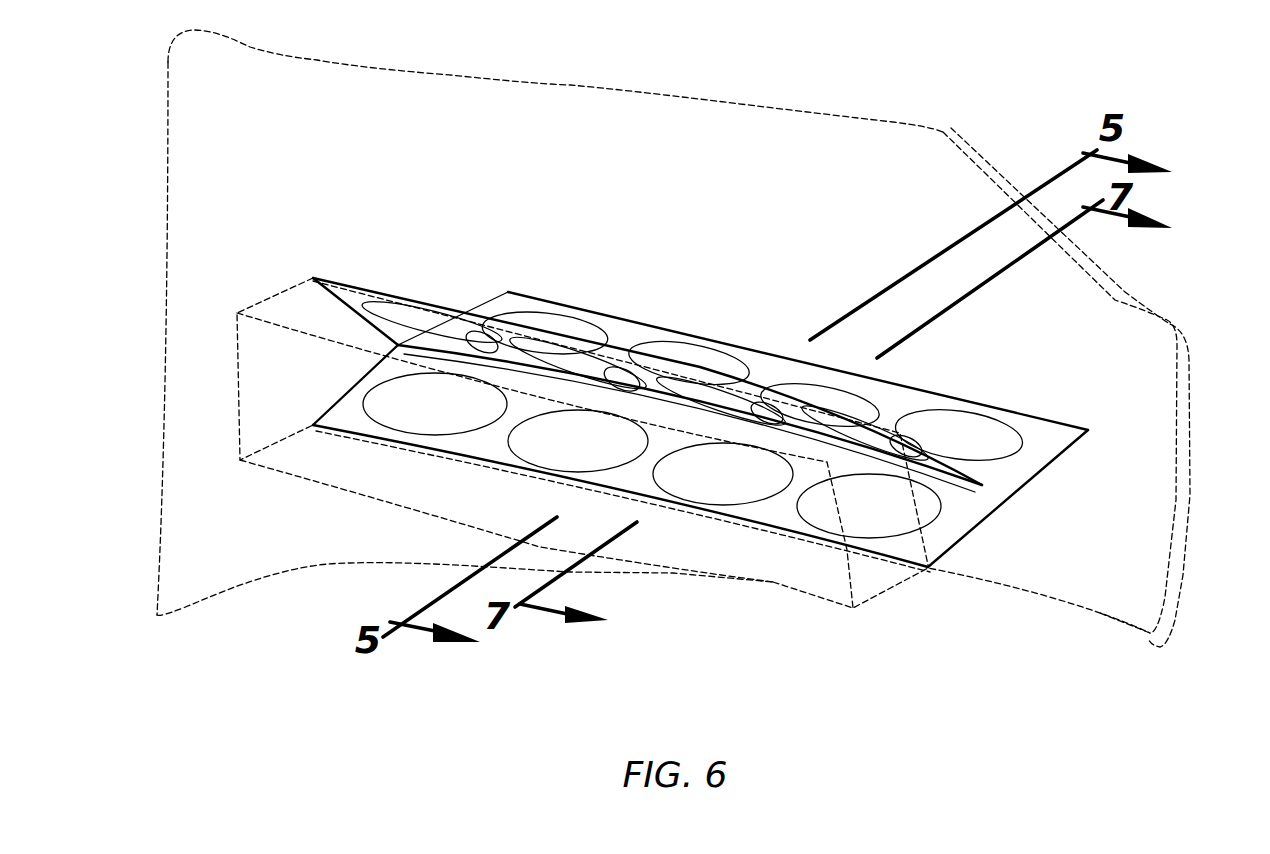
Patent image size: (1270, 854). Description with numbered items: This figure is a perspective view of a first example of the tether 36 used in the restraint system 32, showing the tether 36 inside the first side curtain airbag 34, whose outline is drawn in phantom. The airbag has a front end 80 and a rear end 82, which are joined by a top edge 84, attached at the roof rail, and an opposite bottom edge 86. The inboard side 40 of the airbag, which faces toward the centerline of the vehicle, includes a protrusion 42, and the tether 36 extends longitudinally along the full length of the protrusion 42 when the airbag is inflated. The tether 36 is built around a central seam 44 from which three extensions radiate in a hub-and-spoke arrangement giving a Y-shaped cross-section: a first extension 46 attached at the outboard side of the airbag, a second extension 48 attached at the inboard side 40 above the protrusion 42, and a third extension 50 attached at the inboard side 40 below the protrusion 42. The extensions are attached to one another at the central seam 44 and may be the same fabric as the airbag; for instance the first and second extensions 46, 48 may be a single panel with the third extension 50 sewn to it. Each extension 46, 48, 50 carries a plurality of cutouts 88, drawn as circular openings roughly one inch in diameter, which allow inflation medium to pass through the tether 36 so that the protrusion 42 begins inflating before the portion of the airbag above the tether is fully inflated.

The restraint system 32 is at (878, 46).
The first side curtain airbag 34 is at (1160, 284).
The tether 36 is at (483, 294).
The inboard side 40 is at (322, 533).
The protrusion 42 is at (775, 584).
The central seam 44 is at (962, 488).
The first extension 46 is at (727, 342).
The second extension 48 is at (405, 300).
The third extension 50 is at (720, 540).
The front end 80 is at (1188, 510).
The rear end 82 is at (160, 250).
The top edge 84 is at (617, 88).
The bottom edge 86 is at (350, 563).
The cutouts 88 is at (670, 335).